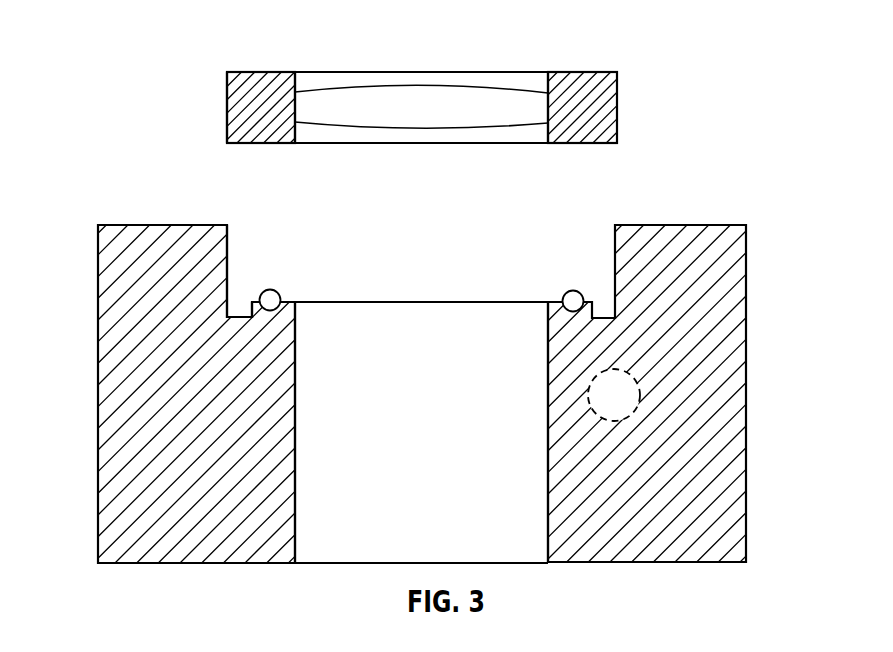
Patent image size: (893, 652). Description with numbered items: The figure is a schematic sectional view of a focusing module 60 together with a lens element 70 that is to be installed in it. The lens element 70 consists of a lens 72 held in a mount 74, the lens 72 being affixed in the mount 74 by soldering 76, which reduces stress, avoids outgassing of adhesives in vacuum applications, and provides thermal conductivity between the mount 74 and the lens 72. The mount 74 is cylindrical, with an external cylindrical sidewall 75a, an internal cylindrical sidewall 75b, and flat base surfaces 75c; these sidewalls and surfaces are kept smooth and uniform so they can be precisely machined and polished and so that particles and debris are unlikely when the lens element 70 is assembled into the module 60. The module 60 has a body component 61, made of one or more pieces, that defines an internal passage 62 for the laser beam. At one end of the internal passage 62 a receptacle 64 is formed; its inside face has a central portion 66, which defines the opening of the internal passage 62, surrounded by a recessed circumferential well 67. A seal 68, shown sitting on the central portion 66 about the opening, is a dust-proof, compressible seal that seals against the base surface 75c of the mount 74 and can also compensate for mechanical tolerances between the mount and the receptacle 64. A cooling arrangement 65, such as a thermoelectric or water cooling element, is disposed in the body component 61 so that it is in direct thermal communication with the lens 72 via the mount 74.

The lens element 70 is at (178, 49).
The lens 72 is at (444, 93).
The mount 74 is at (264, 82).
The external cylindrical sidewall 75a is at (227, 106).
The internal cylindrical sidewall 75b is at (547, 142).
The flat base surfaces 75c is at (257, 143).
The soldering 76 is at (297, 80).
The module 60 is at (121, 200).
The body component 61 is at (98, 502).
The internal passage 62 is at (296, 437).
The receptacle 64 is at (228, 249).
The cooling arrangement 65 is at (640, 392).
The central portion 66 is at (422, 301).
The recessed well 67 is at (238, 316).
The seal 68 is at (566, 291).